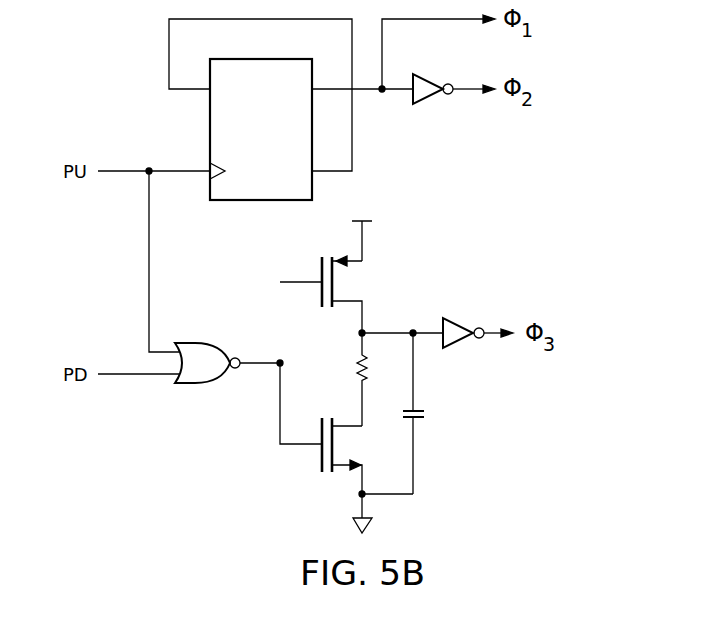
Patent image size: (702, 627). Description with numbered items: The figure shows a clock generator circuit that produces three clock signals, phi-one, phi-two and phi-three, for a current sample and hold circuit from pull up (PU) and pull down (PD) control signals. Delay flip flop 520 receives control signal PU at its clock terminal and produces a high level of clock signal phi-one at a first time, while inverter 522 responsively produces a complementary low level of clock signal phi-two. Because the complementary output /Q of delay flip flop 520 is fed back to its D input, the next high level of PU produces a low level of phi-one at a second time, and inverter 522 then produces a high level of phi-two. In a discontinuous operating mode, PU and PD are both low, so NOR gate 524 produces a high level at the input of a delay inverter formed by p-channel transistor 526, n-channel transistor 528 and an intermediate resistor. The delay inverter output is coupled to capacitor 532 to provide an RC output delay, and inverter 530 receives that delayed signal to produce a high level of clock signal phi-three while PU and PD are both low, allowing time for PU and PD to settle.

The delay flip flop 520 is at (210, 130).
The inverter 522 is at (428, 77).
The NOR gate 524 is at (197, 386).
The p-channel transistor 526 is at (321, 274).
The n-channel transistor 528 is at (320, 455).
The inverter 530 is at (462, 345).
The capacitor 532 is at (426, 415).